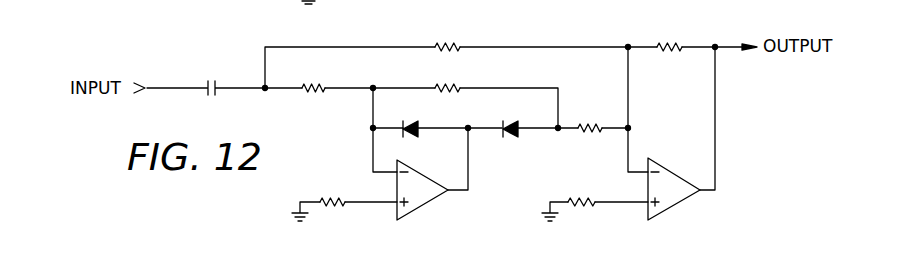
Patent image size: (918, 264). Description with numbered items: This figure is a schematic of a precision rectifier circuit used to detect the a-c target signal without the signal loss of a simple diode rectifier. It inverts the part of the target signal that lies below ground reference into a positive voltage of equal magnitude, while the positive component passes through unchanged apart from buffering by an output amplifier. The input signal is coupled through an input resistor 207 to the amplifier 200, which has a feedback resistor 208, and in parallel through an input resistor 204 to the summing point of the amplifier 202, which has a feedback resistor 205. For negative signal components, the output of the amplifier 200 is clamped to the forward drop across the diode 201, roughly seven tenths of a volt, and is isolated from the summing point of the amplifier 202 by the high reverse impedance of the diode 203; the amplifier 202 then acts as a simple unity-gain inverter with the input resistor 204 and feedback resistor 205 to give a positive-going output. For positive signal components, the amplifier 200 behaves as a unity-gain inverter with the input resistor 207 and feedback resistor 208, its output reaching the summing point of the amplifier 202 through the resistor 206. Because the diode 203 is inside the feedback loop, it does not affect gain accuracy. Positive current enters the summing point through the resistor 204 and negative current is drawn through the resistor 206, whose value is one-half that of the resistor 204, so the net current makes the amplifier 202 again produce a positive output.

The amplifier 200 is at (420, 201).
The diode 201 is at (418, 121).
The amplifier 202 is at (665, 207).
The diode 203 is at (512, 121).
The input resistor 204 is at (455, 41).
The feedback resistor 205 is at (668, 42).
The resistor 206 is at (592, 124).
The input resistor 207 is at (317, 84).
The feedback resistor 208 is at (454, 85).